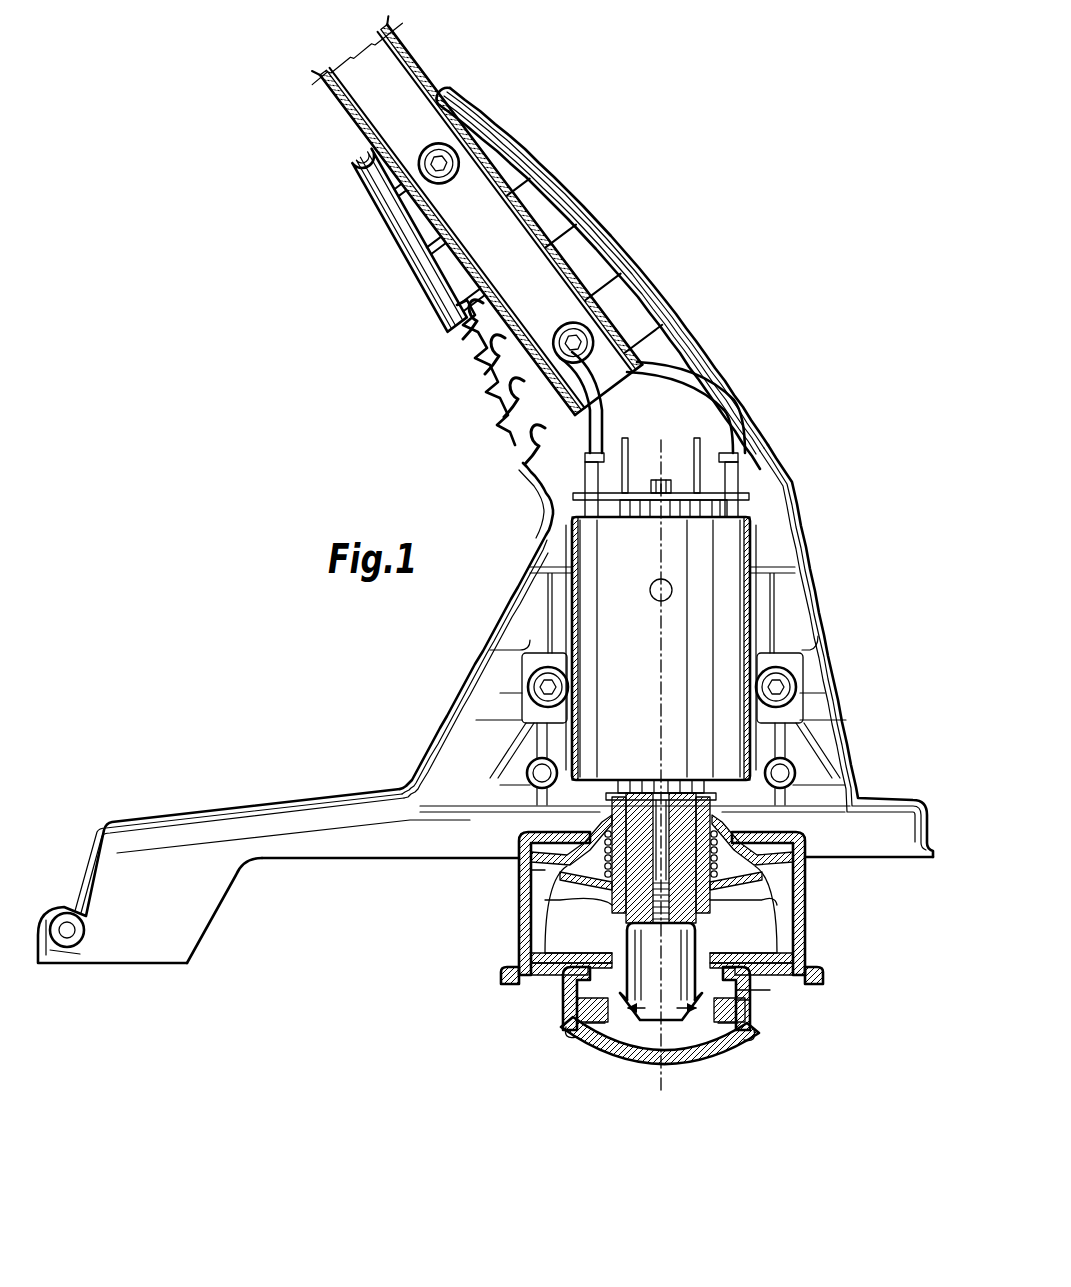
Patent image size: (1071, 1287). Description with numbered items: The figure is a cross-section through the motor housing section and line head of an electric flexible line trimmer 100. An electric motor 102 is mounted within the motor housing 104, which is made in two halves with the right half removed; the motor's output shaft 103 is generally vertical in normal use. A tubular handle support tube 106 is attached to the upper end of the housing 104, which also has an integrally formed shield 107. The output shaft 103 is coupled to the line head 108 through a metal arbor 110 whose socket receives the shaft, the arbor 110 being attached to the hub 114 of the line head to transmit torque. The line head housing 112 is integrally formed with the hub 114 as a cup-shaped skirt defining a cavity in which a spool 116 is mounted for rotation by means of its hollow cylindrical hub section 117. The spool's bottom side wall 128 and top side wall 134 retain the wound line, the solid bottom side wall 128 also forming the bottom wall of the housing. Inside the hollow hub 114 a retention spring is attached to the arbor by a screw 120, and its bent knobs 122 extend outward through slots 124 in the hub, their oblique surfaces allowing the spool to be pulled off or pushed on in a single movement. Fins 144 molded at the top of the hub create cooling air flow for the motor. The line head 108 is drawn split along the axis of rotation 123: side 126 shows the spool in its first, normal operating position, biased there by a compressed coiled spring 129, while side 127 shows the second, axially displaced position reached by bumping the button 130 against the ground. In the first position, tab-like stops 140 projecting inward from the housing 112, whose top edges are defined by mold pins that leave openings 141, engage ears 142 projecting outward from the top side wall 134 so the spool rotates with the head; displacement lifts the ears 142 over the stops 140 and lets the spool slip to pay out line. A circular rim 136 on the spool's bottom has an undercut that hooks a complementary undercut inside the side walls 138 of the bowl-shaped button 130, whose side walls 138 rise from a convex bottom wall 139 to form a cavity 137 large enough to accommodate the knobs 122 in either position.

The electric flexible line trimmer 100 is at (370, 456).
The electric motor 102 is at (740, 533).
The output shaft 103 is at (643, 807).
The motor housing 104 is at (818, 568).
The handle support tube 106 is at (423, 64).
The shield 107 is at (207, 807).
The line head 108 is at (485, 957).
The arbor 110 is at (703, 847).
The line head housing 112 is at (803, 915).
The hub 114 is at (617, 850).
The spool 116 is at (735, 948).
The hub section 117 is at (773, 955).
The screw 120 is at (647, 953).
The knob 122 is at (597, 1007).
The axis of rotation 123 is at (661, 1105).
The slots 124 is at (657, 1023).
The side 126 is at (712, 1090).
The side 127 is at (655, 1090).
The bottom side wall 128 is at (770, 987).
The coiled spring 129 is at (757, 857).
The button 130 is at (548, 1004).
The top side wall 134 is at (537, 913).
The rim 136 is at (753, 1000).
The cavity 137 is at (607, 1023).
The side walls 138 is at (563, 1010).
The bottom wall 139 is at (733, 1043).
The stops 140 is at (540, 893).
The openings 141 is at (543, 846).
The ears 142 is at (540, 865).
The fins 144 is at (547, 857).